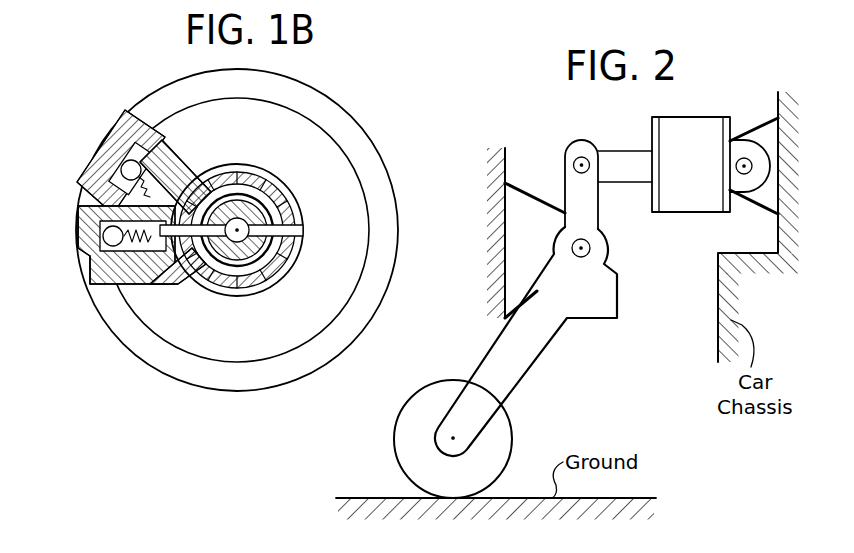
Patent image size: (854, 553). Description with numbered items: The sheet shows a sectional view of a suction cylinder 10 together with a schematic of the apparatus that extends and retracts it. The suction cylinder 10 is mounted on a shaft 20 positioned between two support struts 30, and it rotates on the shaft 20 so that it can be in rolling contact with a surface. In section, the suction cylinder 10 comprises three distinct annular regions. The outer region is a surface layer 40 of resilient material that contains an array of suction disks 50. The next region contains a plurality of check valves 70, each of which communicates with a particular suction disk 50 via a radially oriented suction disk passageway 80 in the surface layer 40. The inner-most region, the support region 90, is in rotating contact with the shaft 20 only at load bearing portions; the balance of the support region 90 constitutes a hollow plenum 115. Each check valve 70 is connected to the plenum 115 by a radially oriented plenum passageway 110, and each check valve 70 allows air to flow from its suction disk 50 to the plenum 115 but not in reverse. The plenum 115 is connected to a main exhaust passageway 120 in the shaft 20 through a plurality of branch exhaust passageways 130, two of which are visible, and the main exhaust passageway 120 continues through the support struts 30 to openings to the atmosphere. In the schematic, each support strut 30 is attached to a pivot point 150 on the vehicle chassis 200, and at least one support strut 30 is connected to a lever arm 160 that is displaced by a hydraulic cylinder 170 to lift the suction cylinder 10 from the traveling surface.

In FIG. 1B, the suction cylinder 10 is at (142, 284).
In FIG. 2, the suction cylinder 10 is at (400, 430).
In FIG. 1B, the shaft 20 is at (248, 216).
In FIG. 2, the support strut 30 is at (510, 348).
In FIG. 1B, the surface layer 40 is at (90, 270).
In FIG. 1B, the suction disk 50 is at (78, 196).
In FIG. 1B, the check valve 70 is at (140, 118).
In FIG. 1B, the suction disk passageway 80 is at (128, 150).
In FIG. 1B, the support region 90 is at (204, 288).
In FIG. 1B, the plenum passageway 110 is at (170, 166).
In FIG. 1B, the plenum 115 is at (256, 290).
In FIG. 1B, the main exhaust passageway 120 is at (282, 250).
In FIG. 1B, the branch exhaust passageway 130 is at (270, 200).
In FIG. 2, the pivot point 150 is at (590, 250).
In FIG. 2, the lever arm 160 is at (565, 182).
In FIG. 2, the hydraulic cylinder 170 is at (708, 128).
In FIG. 2, the vehicle chassis 200 is at (490, 186).